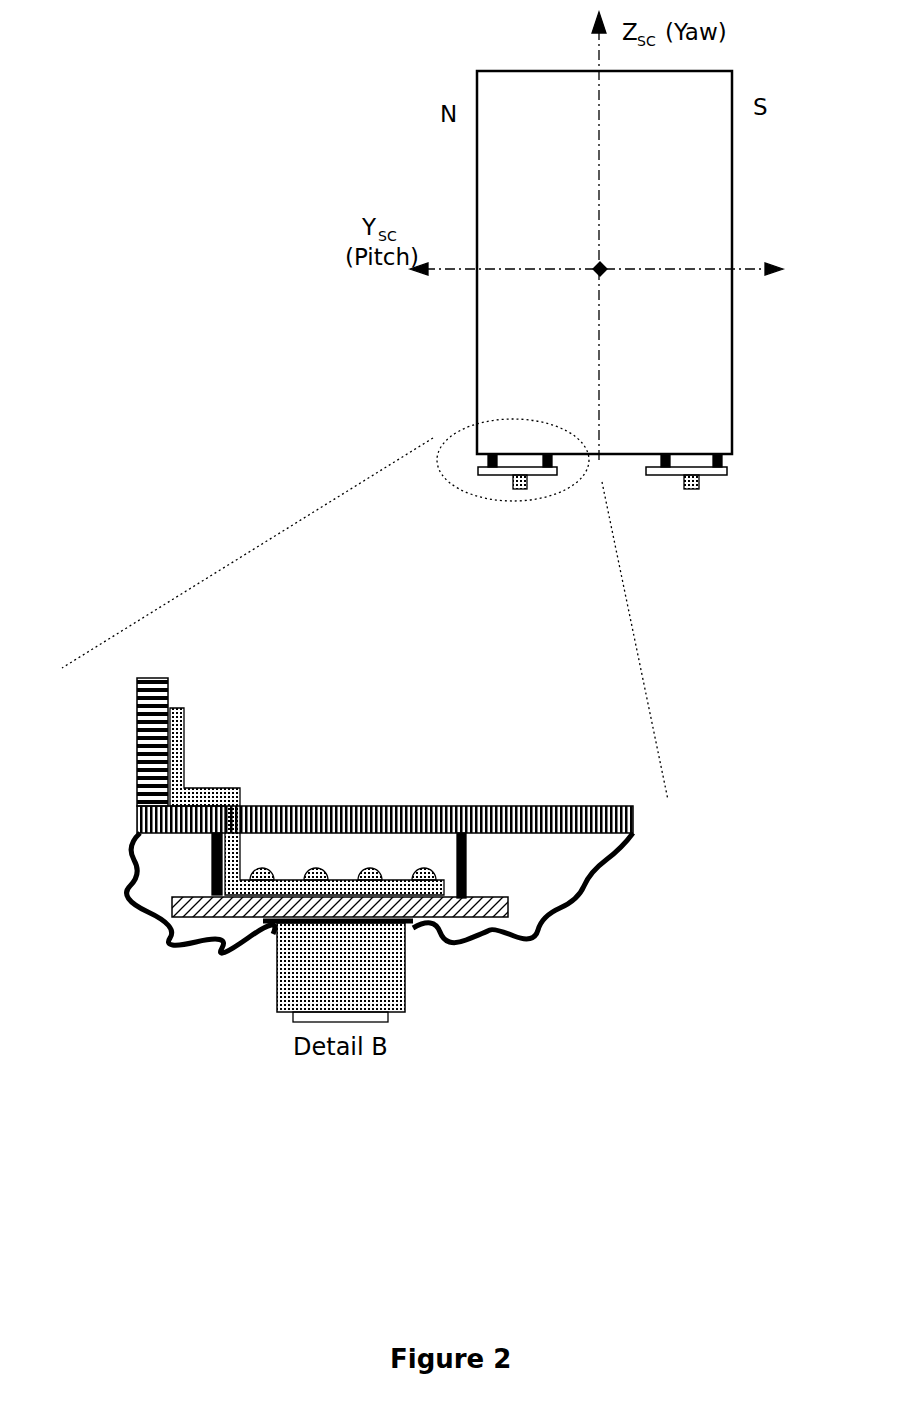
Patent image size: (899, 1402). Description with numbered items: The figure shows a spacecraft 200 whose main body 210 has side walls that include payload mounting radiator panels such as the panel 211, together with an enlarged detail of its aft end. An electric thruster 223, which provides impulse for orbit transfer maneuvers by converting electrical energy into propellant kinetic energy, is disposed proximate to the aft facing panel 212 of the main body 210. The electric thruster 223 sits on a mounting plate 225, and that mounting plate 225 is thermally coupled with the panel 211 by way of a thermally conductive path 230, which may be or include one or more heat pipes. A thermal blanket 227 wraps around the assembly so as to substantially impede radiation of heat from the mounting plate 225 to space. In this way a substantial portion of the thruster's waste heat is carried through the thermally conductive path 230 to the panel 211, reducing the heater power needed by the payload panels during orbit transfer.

The spacecraft 200 is at (378, 44).
The main body 210 is at (713, 211).
The panel 211 is at (477, 357).
The aft facing panel 212 is at (637, 453).
The electric thruster 223 is at (272, 968).
The mounting plate 225 is at (498, 918).
The thermal blanket 227 is at (155, 935).
The thermally conductive path 230 is at (184, 786).